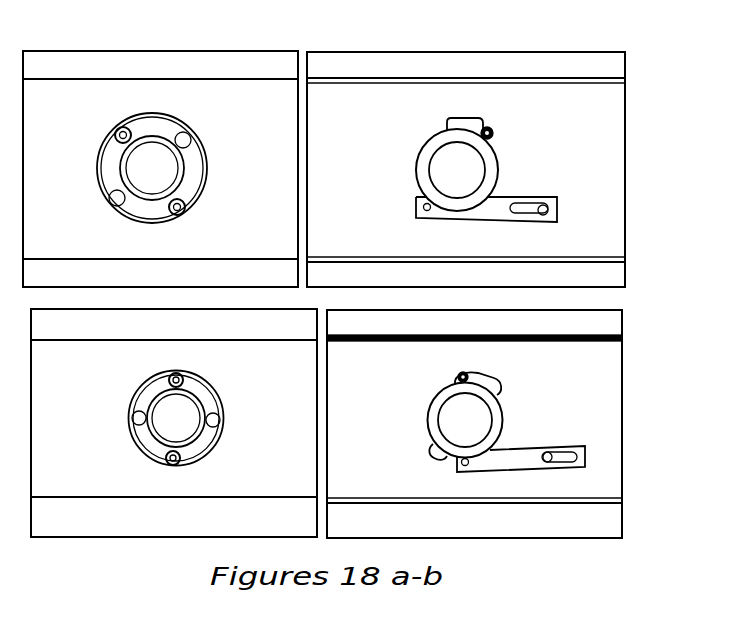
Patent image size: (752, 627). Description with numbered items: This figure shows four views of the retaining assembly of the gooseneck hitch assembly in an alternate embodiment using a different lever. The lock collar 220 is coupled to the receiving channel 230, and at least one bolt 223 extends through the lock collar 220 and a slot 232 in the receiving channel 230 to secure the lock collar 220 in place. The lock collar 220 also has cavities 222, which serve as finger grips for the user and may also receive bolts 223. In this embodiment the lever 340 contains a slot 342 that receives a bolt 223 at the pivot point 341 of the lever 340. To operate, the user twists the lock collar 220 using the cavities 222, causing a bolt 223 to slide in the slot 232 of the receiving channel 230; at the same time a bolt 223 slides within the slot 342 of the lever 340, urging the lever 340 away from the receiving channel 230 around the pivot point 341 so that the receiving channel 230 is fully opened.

In FIG. 18a, the lock collar 220 is at (108, 168).
In FIG. 18c, the lock collar 220 is at (134, 399).
In FIG. 18a, the cavity 222 is at (182, 134).
In FIG. 18c, the cavity 222 is at (136, 424).
In FIG. 18a, the bolt 223 is at (119, 130).
In FIG. 18b, the bolt 223 is at (493, 130).
In FIG. 18c, the bolt 223 is at (170, 374).
In FIG. 18b, the receiving channel 230 is at (485, 162).
In FIG. 18d, the receiving channel 230 is at (502, 411).
In FIG. 18b, the slot 232 is at (476, 122).
In FIG. 18d, the slot 232 is at (497, 388).
In FIG. 18a, the lever 340 is at (156, 194).
In FIG. 18b, the lever 340 is at (556, 202).
In FIG. 18b, the pivot point 341 is at (423, 208).
In FIG. 18d, the pivot point 341 is at (465, 466).
In FIG. 18b, the slot 342 is at (552, 215).
In FIG. 18d, the slot 342 is at (580, 468).